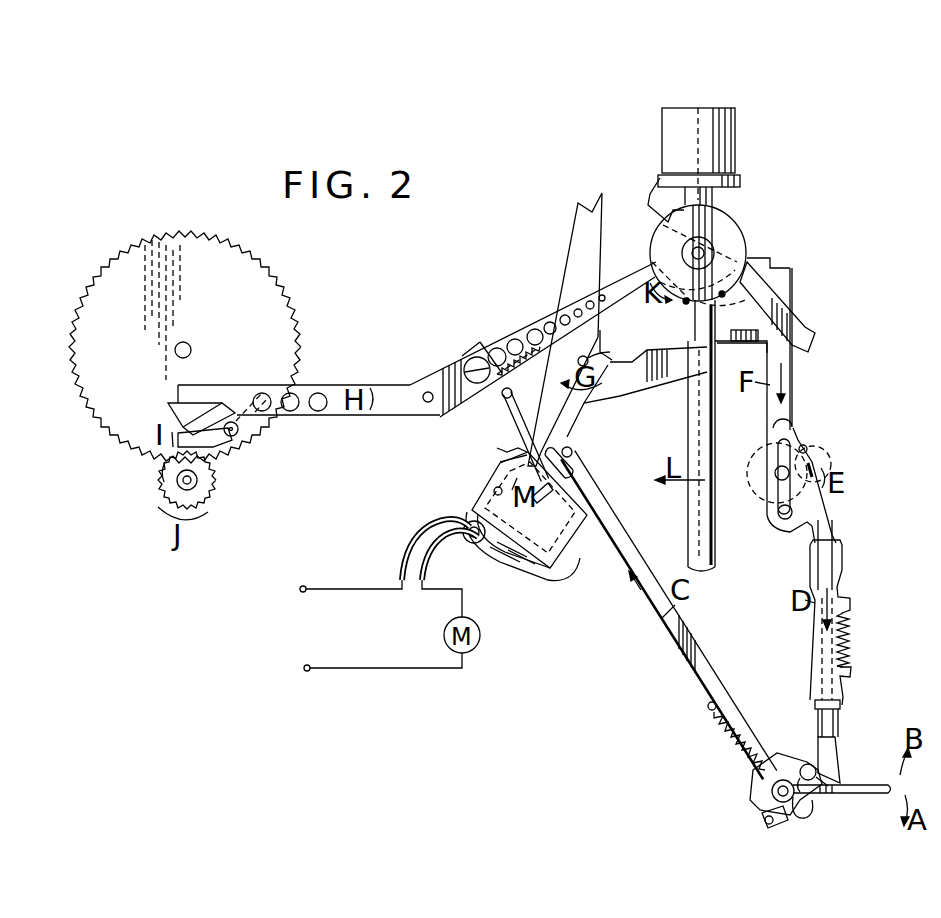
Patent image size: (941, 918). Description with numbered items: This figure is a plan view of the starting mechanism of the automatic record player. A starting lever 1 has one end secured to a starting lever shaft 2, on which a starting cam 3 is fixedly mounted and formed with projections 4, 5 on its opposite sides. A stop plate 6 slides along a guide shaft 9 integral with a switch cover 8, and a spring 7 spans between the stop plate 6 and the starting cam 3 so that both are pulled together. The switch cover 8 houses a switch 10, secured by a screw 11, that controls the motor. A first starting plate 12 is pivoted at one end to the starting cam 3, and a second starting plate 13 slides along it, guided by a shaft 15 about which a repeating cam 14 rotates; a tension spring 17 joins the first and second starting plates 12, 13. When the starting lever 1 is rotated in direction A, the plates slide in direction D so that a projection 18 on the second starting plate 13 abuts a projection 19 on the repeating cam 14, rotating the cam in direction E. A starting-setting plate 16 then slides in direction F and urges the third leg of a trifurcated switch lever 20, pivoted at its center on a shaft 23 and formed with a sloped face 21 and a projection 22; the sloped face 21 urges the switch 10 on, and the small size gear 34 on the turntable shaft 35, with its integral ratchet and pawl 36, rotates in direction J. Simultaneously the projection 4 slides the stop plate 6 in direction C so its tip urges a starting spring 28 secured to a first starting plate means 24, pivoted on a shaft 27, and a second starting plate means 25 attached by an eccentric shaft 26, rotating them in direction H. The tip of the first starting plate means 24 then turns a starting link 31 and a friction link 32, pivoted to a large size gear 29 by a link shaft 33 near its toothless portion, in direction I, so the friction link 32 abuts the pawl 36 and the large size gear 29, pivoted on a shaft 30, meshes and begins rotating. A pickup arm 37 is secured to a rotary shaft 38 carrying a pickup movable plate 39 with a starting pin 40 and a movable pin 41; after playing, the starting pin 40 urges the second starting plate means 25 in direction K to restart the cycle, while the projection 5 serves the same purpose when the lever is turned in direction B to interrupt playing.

The starting lever 1 is at (884, 794).
The starting lever shaft 2 is at (768, 795).
The starting cam 3 is at (812, 808).
The projection 4 is at (762, 822).
The projection 5 is at (805, 765).
The stop plate 6 is at (708, 674).
The spring 7 is at (728, 745).
The switch cover 8 is at (575, 565).
The guide shaft 9 is at (573, 452).
The switch 10 is at (493, 493).
The screw 11 is at (494, 490).
The first starting plate 12 is at (834, 763).
The second starting plate 13 is at (822, 522).
The repeating cam 14 is at (774, 446).
The shaft 15 is at (756, 463).
The starting-setting plate 16 is at (793, 412).
The tension spring 17 is at (853, 634).
The projection 18 is at (807, 447).
The projection 19 is at (833, 462).
The switch lever 20 is at (645, 386).
The sloped face 21 is at (515, 454).
The projection 22 is at (592, 210).
The shaft 23 is at (612, 356).
The first starting plate means 24 is at (388, 417).
The second starting plate means 25 is at (524, 340).
The eccentric shaft 26 is at (466, 358).
The shaft 27 is at (430, 404).
The starting spring 28 is at (508, 400).
The large size gear 29 is at (274, 301).
The shaft 30 is at (200, 333).
The starting link 31 is at (213, 443).
The friction link 32 is at (220, 438).
The link shaft 33 is at (243, 432).
The small size gear 34 is at (210, 491).
The turntable shaft 35 is at (177, 484).
The pawl 36 is at (164, 472).
The pickup arm 37 is at (698, 538).
The rotary shaft 38 is at (710, 244).
The pickup movable plate 39 is at (802, 328).
The starting pin 40 is at (695, 303).
The movable pin 41 is at (741, 326).